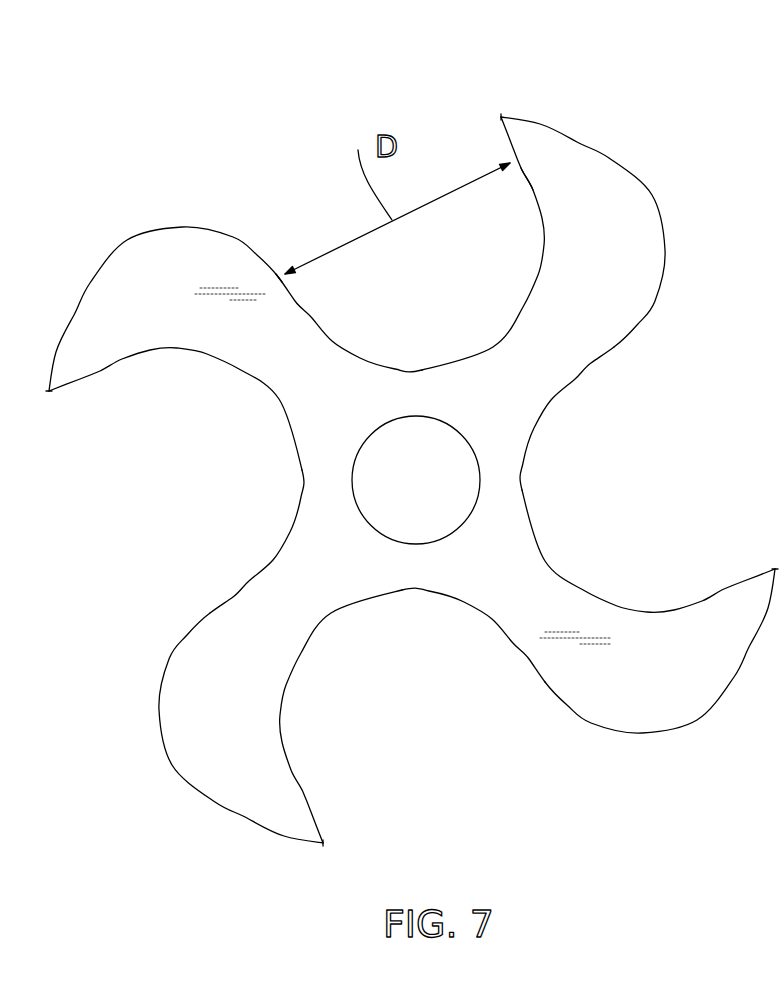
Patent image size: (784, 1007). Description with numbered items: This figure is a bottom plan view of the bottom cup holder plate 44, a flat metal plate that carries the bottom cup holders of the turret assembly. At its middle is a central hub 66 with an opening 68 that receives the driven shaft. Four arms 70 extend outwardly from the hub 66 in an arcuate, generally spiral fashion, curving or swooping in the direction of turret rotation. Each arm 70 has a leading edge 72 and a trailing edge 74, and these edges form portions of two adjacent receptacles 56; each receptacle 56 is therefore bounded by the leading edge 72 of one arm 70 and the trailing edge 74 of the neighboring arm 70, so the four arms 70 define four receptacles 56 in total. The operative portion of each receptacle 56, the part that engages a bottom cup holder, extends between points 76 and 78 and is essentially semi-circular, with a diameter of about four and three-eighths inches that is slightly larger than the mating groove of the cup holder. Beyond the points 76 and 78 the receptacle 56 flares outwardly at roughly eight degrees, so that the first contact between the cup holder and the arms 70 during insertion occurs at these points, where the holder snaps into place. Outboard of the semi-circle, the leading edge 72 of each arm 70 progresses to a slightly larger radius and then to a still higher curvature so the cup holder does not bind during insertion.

The bottom cup holder plate 44 is at (412, 433).
The receptacle 56 is at (529, 470).
The central hub 66 is at (432, 560).
The opening 68 is at (358, 508).
The arm 70 is at (137, 230).
The leading edge 72 is at (200, 227).
The trailing edge 74 is at (192, 350).
The point 76 is at (285, 277).
The point 78 is at (521, 160).